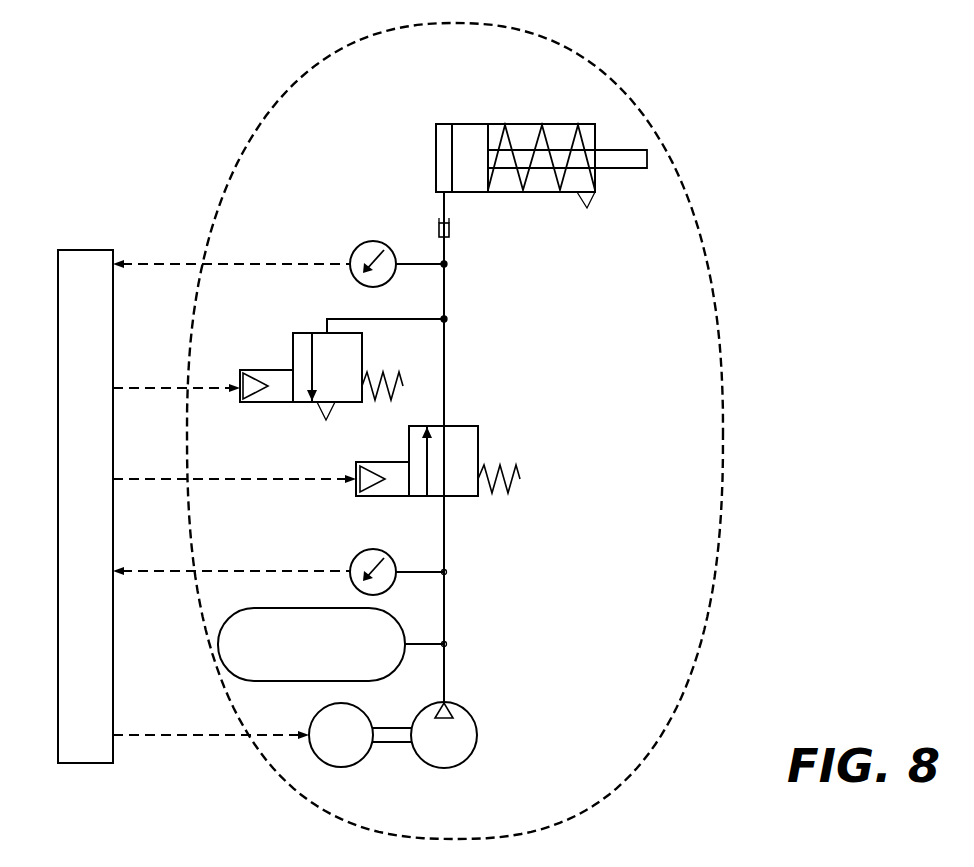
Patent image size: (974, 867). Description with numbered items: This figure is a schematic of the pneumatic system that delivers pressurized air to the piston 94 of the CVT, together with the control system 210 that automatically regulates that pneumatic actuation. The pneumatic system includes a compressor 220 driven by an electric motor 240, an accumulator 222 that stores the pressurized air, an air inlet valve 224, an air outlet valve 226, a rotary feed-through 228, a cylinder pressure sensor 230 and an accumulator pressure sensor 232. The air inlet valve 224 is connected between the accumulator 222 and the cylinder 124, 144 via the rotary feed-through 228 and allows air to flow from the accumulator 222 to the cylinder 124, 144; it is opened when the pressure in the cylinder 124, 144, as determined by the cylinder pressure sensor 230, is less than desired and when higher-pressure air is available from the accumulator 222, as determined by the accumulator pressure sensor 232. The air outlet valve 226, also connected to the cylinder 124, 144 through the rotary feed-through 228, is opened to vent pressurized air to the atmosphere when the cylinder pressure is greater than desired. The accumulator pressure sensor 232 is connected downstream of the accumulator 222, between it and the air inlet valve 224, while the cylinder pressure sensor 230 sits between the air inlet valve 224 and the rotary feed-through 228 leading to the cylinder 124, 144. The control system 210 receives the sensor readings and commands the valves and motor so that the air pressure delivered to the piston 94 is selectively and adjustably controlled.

The piston 94 is at (467, 140).
The cylinder 124 is at (476, 151).
The cylinder 144 is at (436, 137).
The rotary feed-through 228 is at (438, 226).
The cylinder pressure sensor 230 is at (355, 248).
The air outlet valve 226 is at (300, 343).
The air inlet valve 224 is at (462, 445).
The accumulator pressure sensor 232 is at (378, 555).
The accumulator 222 is at (326, 654).
The compressor 220 is at (458, 756).
The electric motor 240 is at (353, 757).
The control system 210 is at (100, 500).